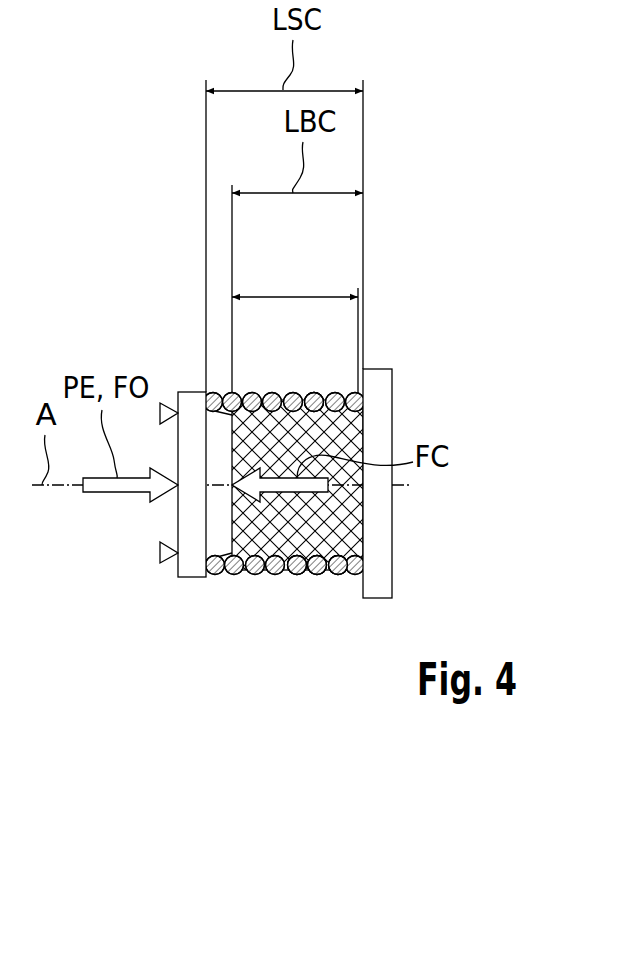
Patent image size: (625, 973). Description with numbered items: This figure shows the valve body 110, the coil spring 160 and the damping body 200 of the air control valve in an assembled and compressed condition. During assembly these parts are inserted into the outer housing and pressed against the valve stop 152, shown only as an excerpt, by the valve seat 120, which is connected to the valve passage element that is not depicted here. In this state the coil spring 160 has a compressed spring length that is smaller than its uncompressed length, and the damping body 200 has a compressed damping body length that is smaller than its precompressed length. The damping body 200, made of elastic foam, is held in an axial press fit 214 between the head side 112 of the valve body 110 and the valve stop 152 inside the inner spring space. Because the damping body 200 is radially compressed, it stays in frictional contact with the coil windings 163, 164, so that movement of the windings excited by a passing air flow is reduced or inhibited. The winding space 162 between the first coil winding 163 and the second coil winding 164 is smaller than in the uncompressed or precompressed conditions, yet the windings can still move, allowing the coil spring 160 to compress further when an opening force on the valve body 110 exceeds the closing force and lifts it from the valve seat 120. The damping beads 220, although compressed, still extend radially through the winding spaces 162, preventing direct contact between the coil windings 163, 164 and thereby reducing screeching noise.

The valve body 110 is at (196, 577).
The head side 112 is at (266, 446).
The valve seat 120 is at (160, 557).
The valve stop 152 is at (367, 435).
The coil spring 160 is at (258, 600).
The winding space 162 is at (327, 588).
The first coil winding 163 is at (320, 576).
The second coil winding 164 is at (339, 576).
The damping body 200 is at (347, 520).
The axial press fit 214 is at (294, 297).
The damping bead 220 is at (318, 395).